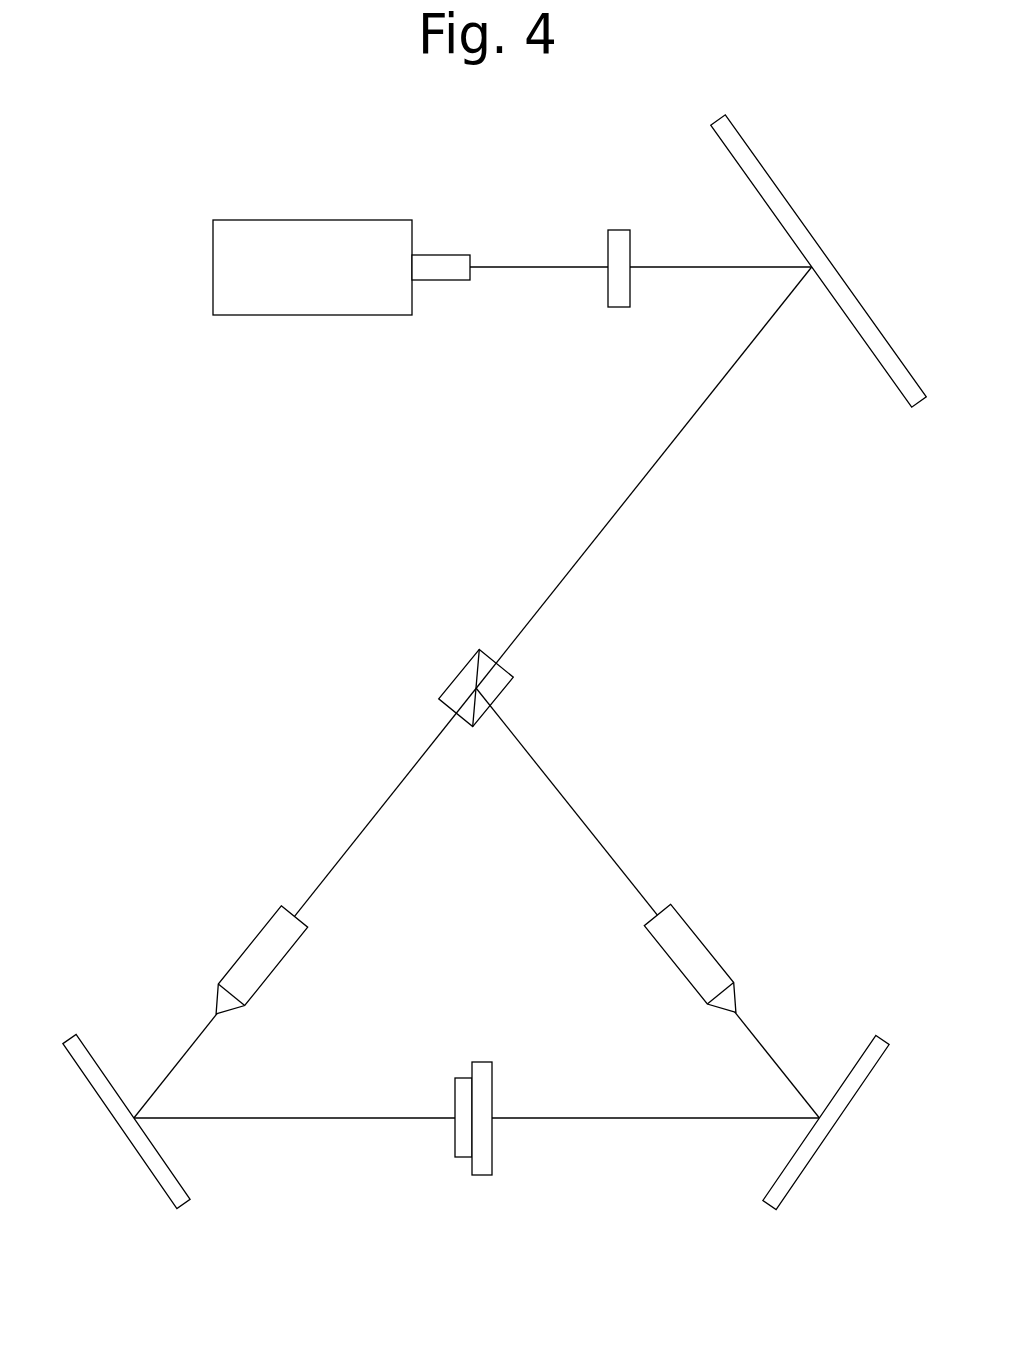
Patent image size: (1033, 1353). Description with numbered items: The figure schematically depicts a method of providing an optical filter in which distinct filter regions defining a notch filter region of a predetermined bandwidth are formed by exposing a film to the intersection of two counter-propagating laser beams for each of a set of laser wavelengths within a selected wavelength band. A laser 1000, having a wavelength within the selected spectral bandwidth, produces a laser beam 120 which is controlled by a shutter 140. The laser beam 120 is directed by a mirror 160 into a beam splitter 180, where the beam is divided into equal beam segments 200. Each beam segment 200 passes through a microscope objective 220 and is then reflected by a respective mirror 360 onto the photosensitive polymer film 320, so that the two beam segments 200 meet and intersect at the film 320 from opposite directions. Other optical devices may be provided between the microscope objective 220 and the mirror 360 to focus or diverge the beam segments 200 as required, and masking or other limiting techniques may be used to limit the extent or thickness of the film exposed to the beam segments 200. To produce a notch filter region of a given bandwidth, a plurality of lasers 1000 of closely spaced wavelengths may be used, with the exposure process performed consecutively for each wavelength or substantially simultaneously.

The laser 1000 is at (277, 220).
The laser beam 120 is at (698, 265).
The shutter 140 is at (620, 228).
The mirror 160 is at (778, 188).
The beam splitter 180 is at (450, 682).
The beam segments 200 is at (350, 842).
The microscope objective 220 is at (243, 952).
The photosensitive polymer film 320 is at (452, 1147).
The mirror 360 is at (142, 1160).